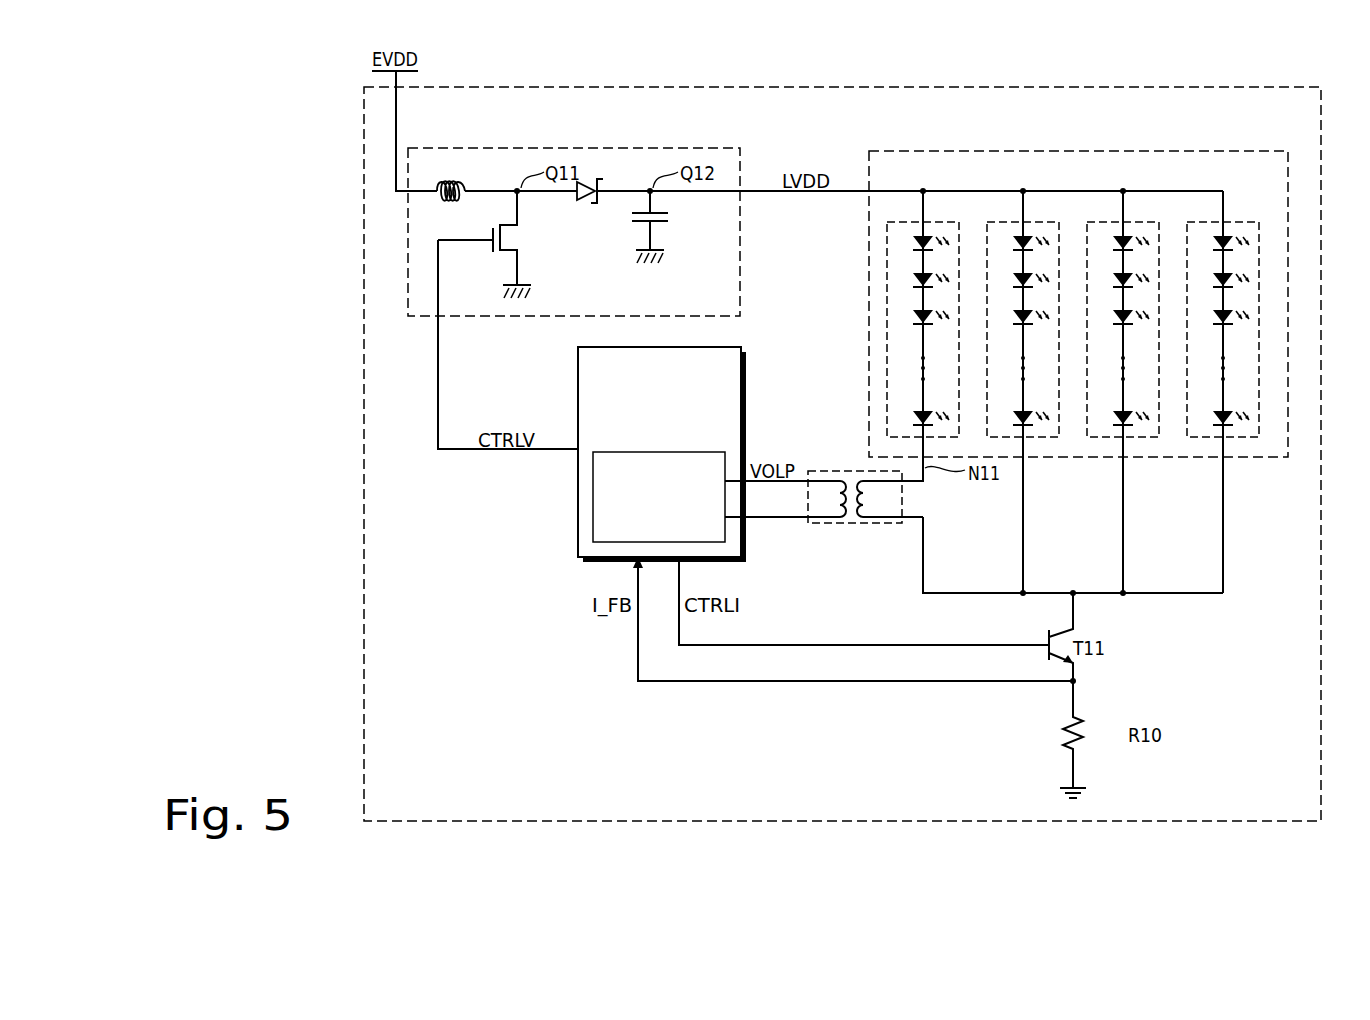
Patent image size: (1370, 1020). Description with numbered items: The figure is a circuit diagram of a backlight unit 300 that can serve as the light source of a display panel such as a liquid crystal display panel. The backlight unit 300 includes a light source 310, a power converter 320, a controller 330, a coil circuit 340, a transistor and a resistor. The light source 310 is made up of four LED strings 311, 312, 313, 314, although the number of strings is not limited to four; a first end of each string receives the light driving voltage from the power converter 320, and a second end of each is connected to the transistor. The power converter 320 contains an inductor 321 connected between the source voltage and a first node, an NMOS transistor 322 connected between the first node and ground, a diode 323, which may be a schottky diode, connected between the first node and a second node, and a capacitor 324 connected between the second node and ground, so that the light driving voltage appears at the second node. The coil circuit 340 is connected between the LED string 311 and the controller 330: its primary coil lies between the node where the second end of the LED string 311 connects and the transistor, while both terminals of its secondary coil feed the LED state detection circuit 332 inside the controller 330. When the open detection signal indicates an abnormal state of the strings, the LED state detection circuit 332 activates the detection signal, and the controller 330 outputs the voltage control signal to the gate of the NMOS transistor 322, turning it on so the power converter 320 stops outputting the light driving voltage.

The backlight unit 300 is at (363, 493).
The light source 310 is at (1187, 151).
The LED string 311 is at (933, 221).
The LED string 312 is at (1033, 221).
The LED string 313 is at (1133, 221).
The LED string 314 is at (1250, 222).
The power converter 320 is at (680, 148).
The inductor 321 is at (465, 183).
The NMOS transistor 322 is at (521, 240).
The diode 323 is at (584, 181).
The capacitor 324 is at (670, 217).
The controller 330 is at (577, 503).
The LED state detection circuit 332 is at (690, 452).
The coil circuit 340 is at (853, 524).